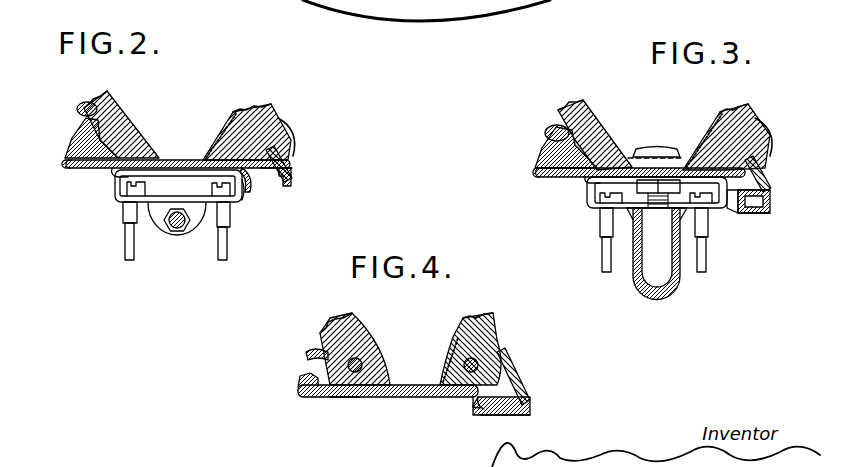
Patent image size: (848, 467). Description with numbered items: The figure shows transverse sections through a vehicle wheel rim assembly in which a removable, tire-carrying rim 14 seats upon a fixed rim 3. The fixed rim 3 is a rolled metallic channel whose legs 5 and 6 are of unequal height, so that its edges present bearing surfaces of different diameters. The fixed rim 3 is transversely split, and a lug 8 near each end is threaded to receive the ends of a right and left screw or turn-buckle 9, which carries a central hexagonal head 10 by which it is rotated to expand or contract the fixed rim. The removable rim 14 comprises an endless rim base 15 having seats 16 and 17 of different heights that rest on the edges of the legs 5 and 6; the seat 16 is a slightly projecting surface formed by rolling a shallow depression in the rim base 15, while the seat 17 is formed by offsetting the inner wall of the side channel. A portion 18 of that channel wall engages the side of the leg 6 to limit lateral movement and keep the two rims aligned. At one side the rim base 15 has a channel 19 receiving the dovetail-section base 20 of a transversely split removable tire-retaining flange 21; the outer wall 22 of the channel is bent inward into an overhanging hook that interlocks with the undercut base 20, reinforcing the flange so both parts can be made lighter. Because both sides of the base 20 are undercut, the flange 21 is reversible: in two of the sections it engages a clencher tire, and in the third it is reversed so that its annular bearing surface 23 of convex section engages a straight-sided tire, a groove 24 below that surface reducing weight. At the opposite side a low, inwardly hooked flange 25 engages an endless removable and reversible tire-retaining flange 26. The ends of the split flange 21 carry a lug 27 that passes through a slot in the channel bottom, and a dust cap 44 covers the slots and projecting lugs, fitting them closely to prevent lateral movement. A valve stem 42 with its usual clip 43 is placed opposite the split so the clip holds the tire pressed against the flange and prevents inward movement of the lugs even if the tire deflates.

In FIG. 2, the fixed rim 3 is at (146, 197).
In FIG. 3, the fixed rim 3 is at (622, 210).
In FIG. 2, the leg of fixed rim channel 5 is at (117, 192).
In FIG. 3, the leg of fixed rim channel 5 is at (588, 198).
In FIG. 2, the leg of fixed rim channel 6 is at (238, 204).
In FIG. 3, the leg of fixed rim channel 6 is at (715, 210).
In FIG. 2, the lug 8 is at (203, 212).
In FIG. 2, the right and left screw or turn-buckle 9 is at (172, 236).
In FIG. 2, the central hexagonal head 10 is at (183, 242).
In FIG. 2, the tire-carrying or removable rim 14 is at (66, 167).
In FIG. 3, the tire-carrying or removable rim 14 is at (538, 173).
In FIG. 2, the rim base 15 is at (173, 160).
In FIG. 3, the rim base 15 is at (615, 166).
In FIG. 4, the rim base 15 is at (405, 397).
In FIG. 2, the seat 16 is at (116, 172).
In FIG. 3, the seat 16 is at (585, 180).
In FIG. 4, the seat 16 is at (348, 397).
In FIG. 2, the seat 17 is at (244, 192).
In FIG. 4, the seat 17 is at (473, 407).
In FIG. 2, the portion of channel wall 18 is at (251, 192).
In FIG. 4, the portion of channel wall 18 is at (478, 410).
In FIG. 2, the channel 19 is at (207, 152).
In FIG. 3, the channel 19 is at (713, 158).
In FIG. 4, the channel 19 is at (513, 375).
In FIG. 2, the base of tire-retaining flange 20 is at (290, 186).
In FIG. 3, the base of tire-retaining flange 20 is at (772, 200).
In FIG. 4, the base of tire-retaining flange 20 is at (520, 415).
In FIG. 2, the transversely split removable tire-retaining flange 21 is at (288, 140).
In FIG. 3, the transversely split removable tire-retaining flange 21 is at (766, 157).
In FIG. 4, the transversely split removable tire-retaining flange 21 is at (510, 370).
In FIG. 2, the outer wall of channel 22 is at (291, 171).
In FIG. 3, the outer wall of channel 22 is at (771, 190).
In FIG. 4, the outer wall of channel 22 is at (530, 402).
In FIG. 2, the annular bearing surface 23 is at (273, 127).
In FIG. 3, the annular bearing surface 23 is at (745, 138).
In FIG. 4, the annular bearing surface 23 is at (468, 340).
In FIG. 2, the groove 24 is at (288, 158).
In FIG. 3, the groove 24 is at (771, 168).
In FIG. 2, the inwardly hooked flange 25 is at (64, 155).
In FIG. 3, the inwardly hooked flange 25 is at (540, 158).
In FIG. 4, the inwardly hooked flange 25 is at (298, 382).
In FIG. 2, the endless removable and reversible tire-retaining flange 26 is at (84, 110).
In FIG. 3, the endless removable and reversible tire-retaining flange 26 is at (553, 128).
In FIG. 4, the endless removable and reversible tire-retaining flange 26 is at (317, 355).
In FIG. 3, the lug 27 is at (756, 213).
In FIG. 3, the valve stem 42 is at (667, 257).
In FIG. 3, the clip 43 is at (636, 150).
In FIG. 3, the dust cap 44 is at (770, 214).